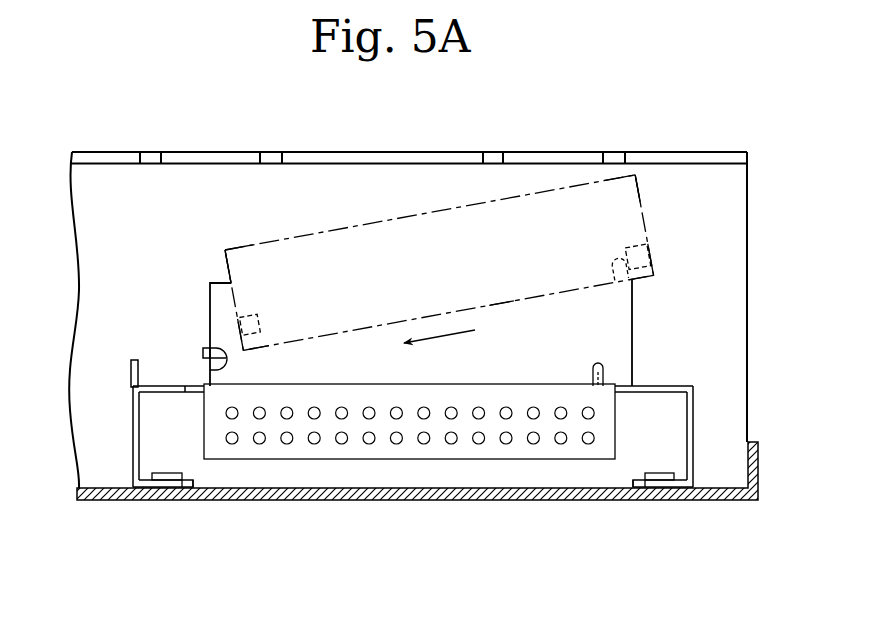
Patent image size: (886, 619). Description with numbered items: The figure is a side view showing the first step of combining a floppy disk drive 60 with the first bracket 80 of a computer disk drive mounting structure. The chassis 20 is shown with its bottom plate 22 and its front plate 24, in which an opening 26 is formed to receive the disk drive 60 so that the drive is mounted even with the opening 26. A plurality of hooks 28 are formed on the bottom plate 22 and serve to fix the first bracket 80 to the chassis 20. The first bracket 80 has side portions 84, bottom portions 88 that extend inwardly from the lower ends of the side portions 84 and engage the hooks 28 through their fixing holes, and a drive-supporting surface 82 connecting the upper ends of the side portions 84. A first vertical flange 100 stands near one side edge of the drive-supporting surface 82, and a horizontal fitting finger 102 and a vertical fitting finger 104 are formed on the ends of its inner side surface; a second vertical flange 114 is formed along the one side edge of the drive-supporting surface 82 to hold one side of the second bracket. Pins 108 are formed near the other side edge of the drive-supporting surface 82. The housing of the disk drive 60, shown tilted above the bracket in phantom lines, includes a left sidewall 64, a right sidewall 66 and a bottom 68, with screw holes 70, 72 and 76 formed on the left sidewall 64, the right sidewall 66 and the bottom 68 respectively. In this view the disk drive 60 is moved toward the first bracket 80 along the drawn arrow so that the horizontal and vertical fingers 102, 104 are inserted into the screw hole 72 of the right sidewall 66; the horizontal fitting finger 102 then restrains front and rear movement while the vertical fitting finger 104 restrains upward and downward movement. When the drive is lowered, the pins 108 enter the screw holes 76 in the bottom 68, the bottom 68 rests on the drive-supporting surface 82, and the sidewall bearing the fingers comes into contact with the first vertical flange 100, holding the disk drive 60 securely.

The chassis 20 is at (758, 213).
The bottom plate 22 is at (98, 486).
The front plate 24 is at (727, 292).
The opening 26 is at (605, 308).
The hooks 28 is at (166, 480).
The floppy disk drive 60 is at (213, 243).
The left sidewall 64 is at (645, 192).
The right sidewall 66 is at (226, 266).
The bottom 68 is at (490, 305).
The screw hole 70 is at (655, 256).
The screw hole 72 is at (260, 320).
The screw hole 76 is at (612, 258).
The first bracket 80 is at (702, 467).
The drive-supporting surface 82 is at (700, 386).
The side portions 84 is at (695, 412).
The bottom portions 88 is at (186, 487).
The first vertical flange 100 is at (203, 352).
The horizontal fitting finger 102 is at (226, 362).
The vertical fitting finger 104 is at (208, 350).
The pins 108 is at (633, 360).
The second vertical flange 114 is at (131, 372).